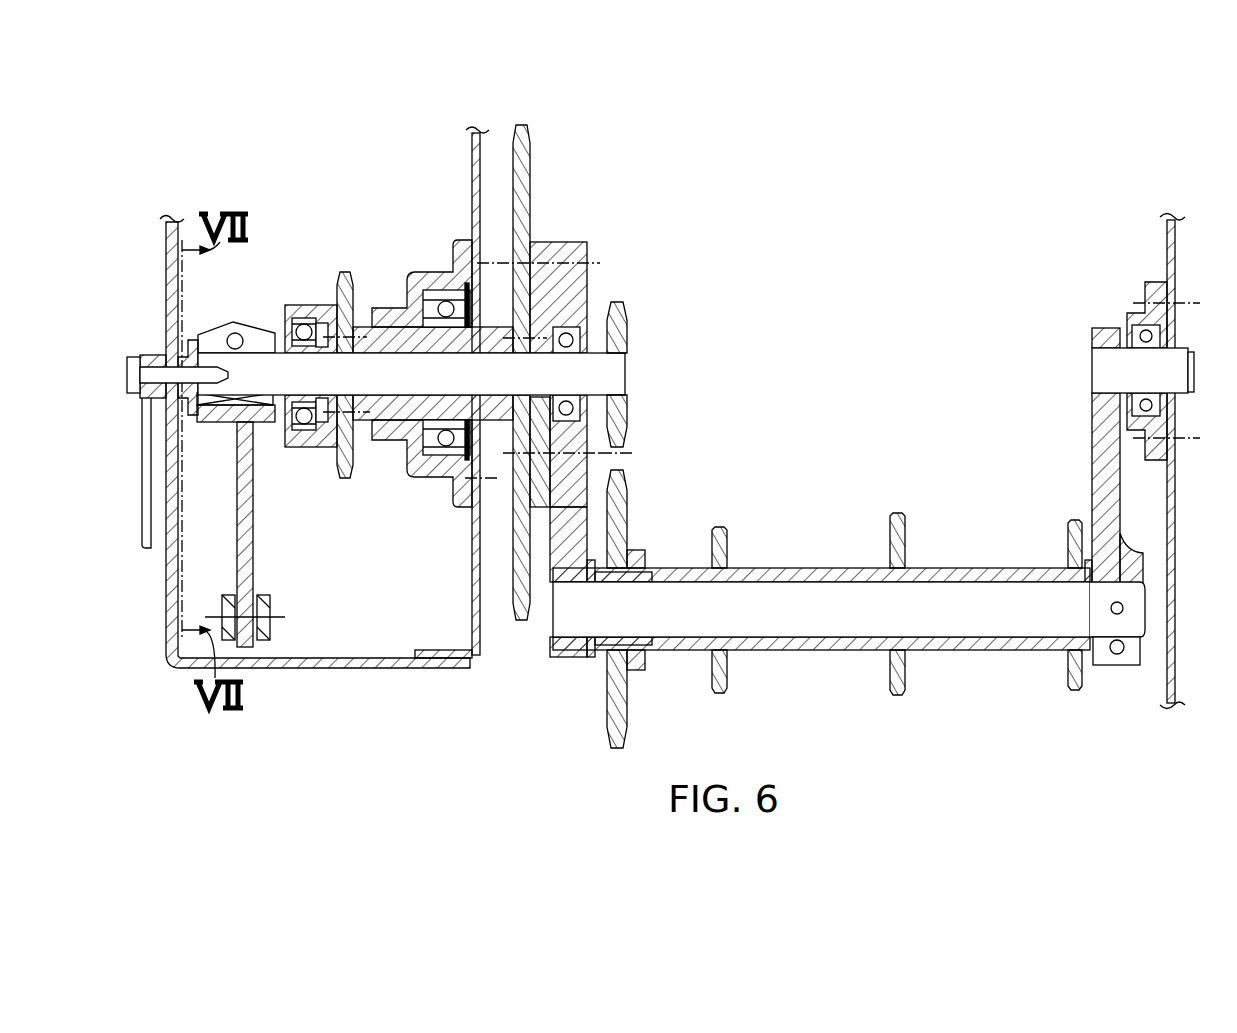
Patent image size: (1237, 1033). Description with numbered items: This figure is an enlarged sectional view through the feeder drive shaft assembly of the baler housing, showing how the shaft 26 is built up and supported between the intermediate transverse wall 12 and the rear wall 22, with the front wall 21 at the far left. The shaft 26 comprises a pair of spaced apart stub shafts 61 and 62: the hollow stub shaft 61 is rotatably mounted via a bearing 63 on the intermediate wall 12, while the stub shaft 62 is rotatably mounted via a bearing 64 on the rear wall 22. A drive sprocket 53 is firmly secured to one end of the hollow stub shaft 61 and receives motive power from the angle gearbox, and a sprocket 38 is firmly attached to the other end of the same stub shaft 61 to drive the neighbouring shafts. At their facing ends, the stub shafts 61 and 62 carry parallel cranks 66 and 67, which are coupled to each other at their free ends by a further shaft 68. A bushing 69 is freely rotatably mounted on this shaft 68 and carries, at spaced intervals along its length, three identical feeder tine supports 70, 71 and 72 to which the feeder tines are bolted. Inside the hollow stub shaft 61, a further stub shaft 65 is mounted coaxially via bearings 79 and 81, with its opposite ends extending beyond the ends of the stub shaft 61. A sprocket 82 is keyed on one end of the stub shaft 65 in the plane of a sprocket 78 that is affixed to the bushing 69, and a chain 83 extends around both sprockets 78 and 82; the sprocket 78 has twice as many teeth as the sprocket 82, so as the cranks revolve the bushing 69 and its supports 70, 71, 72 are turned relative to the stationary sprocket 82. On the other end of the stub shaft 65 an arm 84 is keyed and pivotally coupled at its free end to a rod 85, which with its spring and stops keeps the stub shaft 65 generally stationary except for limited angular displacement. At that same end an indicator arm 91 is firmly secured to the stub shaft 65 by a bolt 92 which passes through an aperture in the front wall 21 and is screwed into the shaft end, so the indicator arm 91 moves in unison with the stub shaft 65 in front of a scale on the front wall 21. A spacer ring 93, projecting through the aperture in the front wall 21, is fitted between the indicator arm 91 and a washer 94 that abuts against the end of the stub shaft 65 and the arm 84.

The intermediate transverse wall 12 is at (472, 185).
The front wall 21 is at (166, 244).
The rear wall 22 is at (1175, 645).
The shaft 26 is at (1194, 380).
The sprocket 38 is at (335, 305).
The drive sprocket 53 is at (530, 190).
The stub shaft 61 is at (360, 327).
The stub shaft 62 is at (1207, 340).
The bearing 63 is at (442, 290).
The bearing 64 is at (1140, 318).
The stub shaft 65 is at (627, 372).
The crank 66 is at (568, 657).
The crank 67 is at (1090, 460).
The shaft 68 is at (1145, 640).
The bushing 69 is at (815, 650).
The feeder tine support 70 is at (727, 683).
The feeder tine support 71 is at (905, 680).
The feeder tine support 72 is at (1068, 662).
The sprocket 78 is at (607, 704).
The bearing 79 is at (283, 447).
The bearing 81 is at (578, 327).
The sprocket 82 is at (628, 415).
The chain 83 is at (628, 455).
The arm 84 is at (237, 523).
The rod 85 is at (282, 590).
The indicator arm 91 is at (150, 548).
The bolt 92 is at (133, 357).
The spacer ring 93 is at (152, 353).
The washer 94 is at (196, 340).